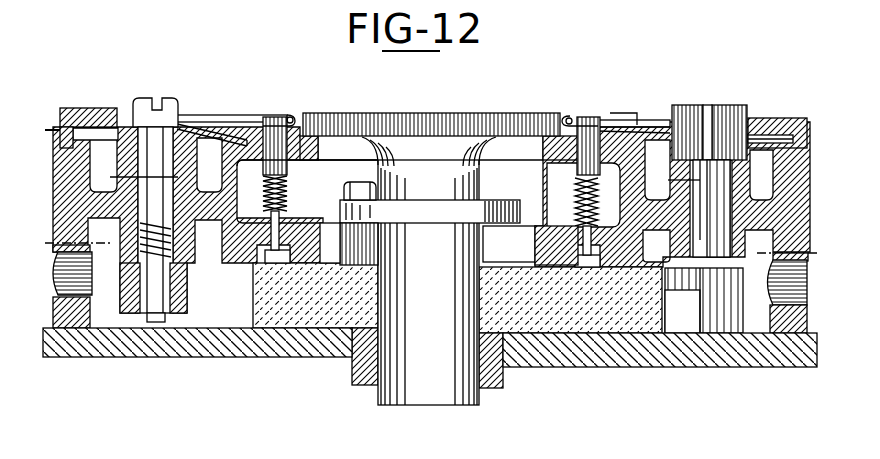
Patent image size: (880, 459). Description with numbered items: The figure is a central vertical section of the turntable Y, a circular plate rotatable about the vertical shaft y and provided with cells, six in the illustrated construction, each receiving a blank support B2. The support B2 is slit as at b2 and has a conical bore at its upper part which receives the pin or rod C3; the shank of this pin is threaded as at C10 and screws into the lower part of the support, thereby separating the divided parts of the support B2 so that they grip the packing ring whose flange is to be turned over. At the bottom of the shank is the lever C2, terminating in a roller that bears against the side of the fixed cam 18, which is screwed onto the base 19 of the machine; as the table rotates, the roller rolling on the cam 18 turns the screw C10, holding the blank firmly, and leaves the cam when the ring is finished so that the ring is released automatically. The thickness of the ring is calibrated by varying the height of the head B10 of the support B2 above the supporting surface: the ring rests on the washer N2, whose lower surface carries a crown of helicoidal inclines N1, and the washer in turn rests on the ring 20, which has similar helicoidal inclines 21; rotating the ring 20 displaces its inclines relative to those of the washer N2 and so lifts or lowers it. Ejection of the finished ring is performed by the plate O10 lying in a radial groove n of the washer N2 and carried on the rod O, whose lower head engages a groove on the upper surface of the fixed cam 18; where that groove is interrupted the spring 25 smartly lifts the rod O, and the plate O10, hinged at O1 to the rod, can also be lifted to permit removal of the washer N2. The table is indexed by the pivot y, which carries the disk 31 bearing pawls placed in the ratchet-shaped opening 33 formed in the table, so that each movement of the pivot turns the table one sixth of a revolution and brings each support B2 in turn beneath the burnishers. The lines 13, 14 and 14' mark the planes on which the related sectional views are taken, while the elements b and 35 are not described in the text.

The section line 14' is at (302, 102).
The washer N2 is at (100, 120).
The helicoidal inclines N1 is at (110, 125).
The radial groove n is at (214, 114).
The head of the support B10 is at (205, 116).
The pin or rod C3 is at (160, 108).
The lever C2 is at (192, 290).
The plate O10 is at (258, 118).
The hinge O1 is at (290, 115).
The rod O is at (263, 188).
The spring 25 is at (280, 212).
The section line 13 is at (340, 221).
The opening 33 is at (530, 245).
The disk 31 is at (511, 174).
The vertical shaft y is at (429, 271).
The helicoidal inclines 21 is at (103, 166).
The bore b is at (137, 181).
The ring 20 is at (484, 165).
The slit b2 is at (672, 170).
The blank support B2 is at (482, 218).
The section line 14 is at (431, 241).
The screw thread C10 is at (93, 255).
The turntable Y is at (736, 300).
The foot block 35 is at (70, 283).
The base 19 is at (228, 357).
The fixed cam 18 is at (578, 367).